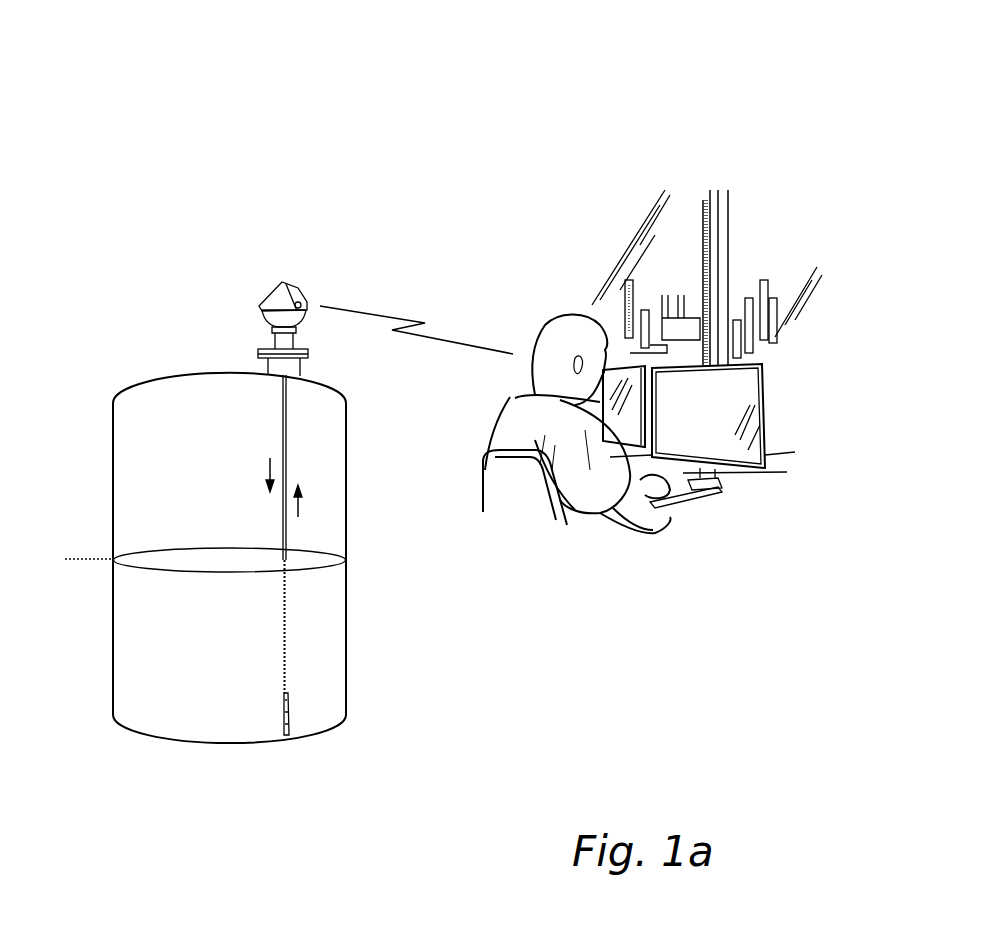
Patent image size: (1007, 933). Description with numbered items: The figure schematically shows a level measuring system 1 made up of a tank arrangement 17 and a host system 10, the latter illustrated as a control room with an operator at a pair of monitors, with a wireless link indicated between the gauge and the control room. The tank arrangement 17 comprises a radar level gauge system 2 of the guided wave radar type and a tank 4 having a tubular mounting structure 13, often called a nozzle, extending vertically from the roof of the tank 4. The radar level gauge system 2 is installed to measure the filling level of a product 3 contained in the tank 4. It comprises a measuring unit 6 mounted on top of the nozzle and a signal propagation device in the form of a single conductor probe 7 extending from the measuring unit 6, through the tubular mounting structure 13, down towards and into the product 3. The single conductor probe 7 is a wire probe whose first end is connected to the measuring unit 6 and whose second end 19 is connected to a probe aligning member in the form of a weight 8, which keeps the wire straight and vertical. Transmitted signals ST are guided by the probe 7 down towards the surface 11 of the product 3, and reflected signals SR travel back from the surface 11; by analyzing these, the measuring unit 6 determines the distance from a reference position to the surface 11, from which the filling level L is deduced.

The level measuring system 1 is at (572, 57).
The radar level gauge system 2 is at (240, 282).
The product 3 is at (208, 666).
The tank 4 is at (112, 502).
The measuring unit 6 is at (273, 292).
The single conductor probe 7 is at (287, 460).
The weight 8 is at (290, 725).
The host system 10 is at (753, 248).
The surface 11 is at (196, 560).
The tubular mounting structure 13 is at (303, 366).
The tank arrangement 17 is at (182, 158).
The second end 19 is at (283, 697).
The filling level L is at (75, 562).
The transmitted signals ST is at (255, 484).
The reflected signals SR is at (312, 511).